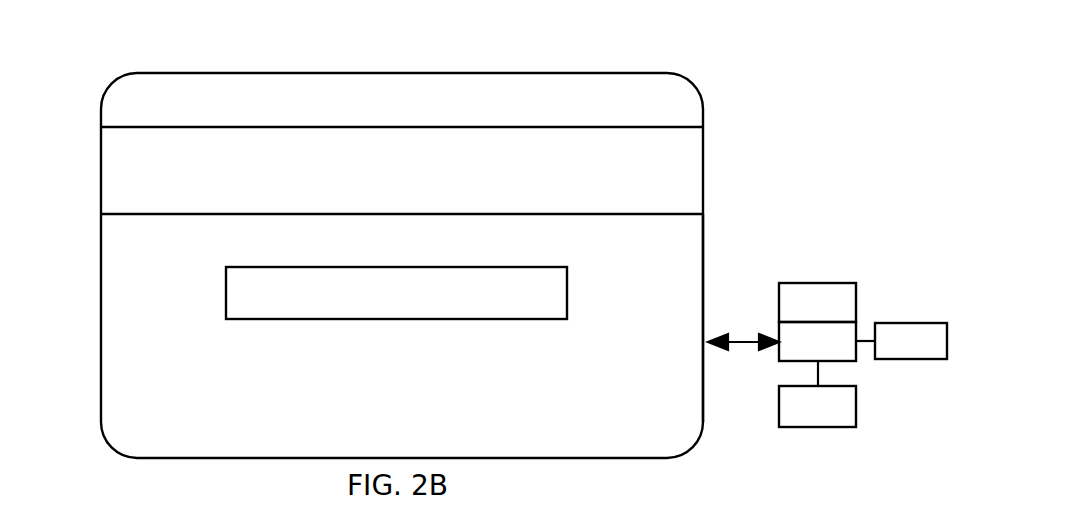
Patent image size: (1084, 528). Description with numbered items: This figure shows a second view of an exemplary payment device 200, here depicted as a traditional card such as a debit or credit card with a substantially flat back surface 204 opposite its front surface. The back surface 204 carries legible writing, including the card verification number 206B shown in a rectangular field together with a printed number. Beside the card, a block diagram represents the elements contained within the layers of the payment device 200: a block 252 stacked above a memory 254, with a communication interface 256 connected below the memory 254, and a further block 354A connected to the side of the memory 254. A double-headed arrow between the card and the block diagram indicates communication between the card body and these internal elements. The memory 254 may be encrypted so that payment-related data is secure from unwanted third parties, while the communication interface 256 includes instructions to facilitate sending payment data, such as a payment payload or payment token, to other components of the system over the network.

The payment device 200 is at (213, 80).
The back surface 204 is at (683, 255).
The card verification number 206B is at (537, 271).
The processor 252 is at (817, 302).
The memory 254 is at (827, 354).
The communication interface 256 is at (817, 406).
The antenna 354A is at (911, 341).